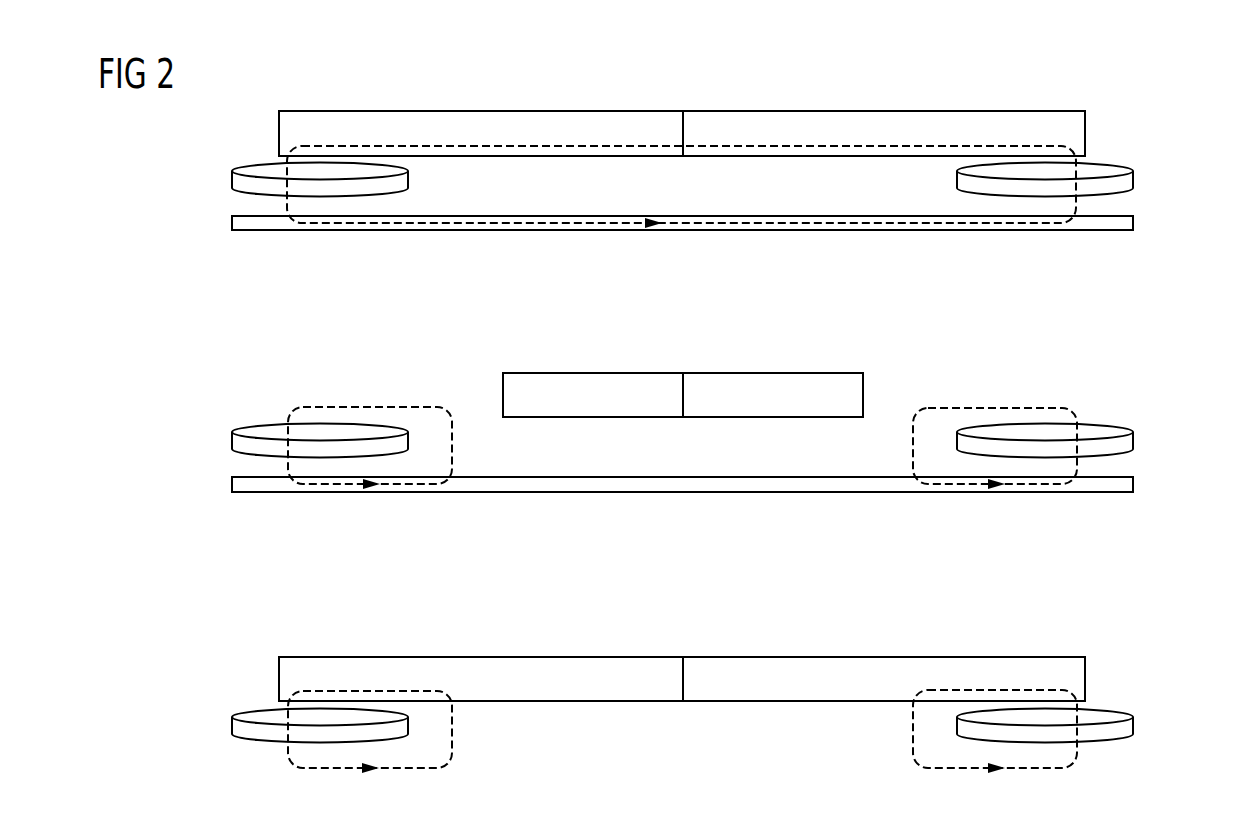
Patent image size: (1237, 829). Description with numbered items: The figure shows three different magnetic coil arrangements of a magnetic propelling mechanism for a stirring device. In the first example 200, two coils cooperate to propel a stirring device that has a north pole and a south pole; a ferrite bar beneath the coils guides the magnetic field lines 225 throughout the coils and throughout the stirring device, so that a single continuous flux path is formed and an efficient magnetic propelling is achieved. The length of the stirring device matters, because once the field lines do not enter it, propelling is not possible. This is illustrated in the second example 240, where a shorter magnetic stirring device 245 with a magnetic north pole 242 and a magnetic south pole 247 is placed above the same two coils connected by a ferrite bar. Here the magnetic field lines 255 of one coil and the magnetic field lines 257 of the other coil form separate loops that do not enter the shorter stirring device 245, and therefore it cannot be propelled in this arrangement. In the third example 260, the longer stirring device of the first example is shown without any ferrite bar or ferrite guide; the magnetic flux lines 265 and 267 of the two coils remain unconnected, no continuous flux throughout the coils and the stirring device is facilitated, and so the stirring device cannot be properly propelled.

The example 200 is at (654, 166).
The magnetic field lines 225 is at (698, 226).
The example 240 is at (654, 431).
The magnetic north pole 242 is at (540, 390).
The shorter magnetic stirring device 245 is at (683, 368).
The magnetic south pole 247 is at (828, 390).
The magnetic field lines 255 is at (368, 407).
The magnetic field lines 257 is at (994, 408).
The example 260 is at (654, 714).
The magnetic flux lines 265 is at (405, 771).
The magnetic flux lines 267 is at (965, 771).